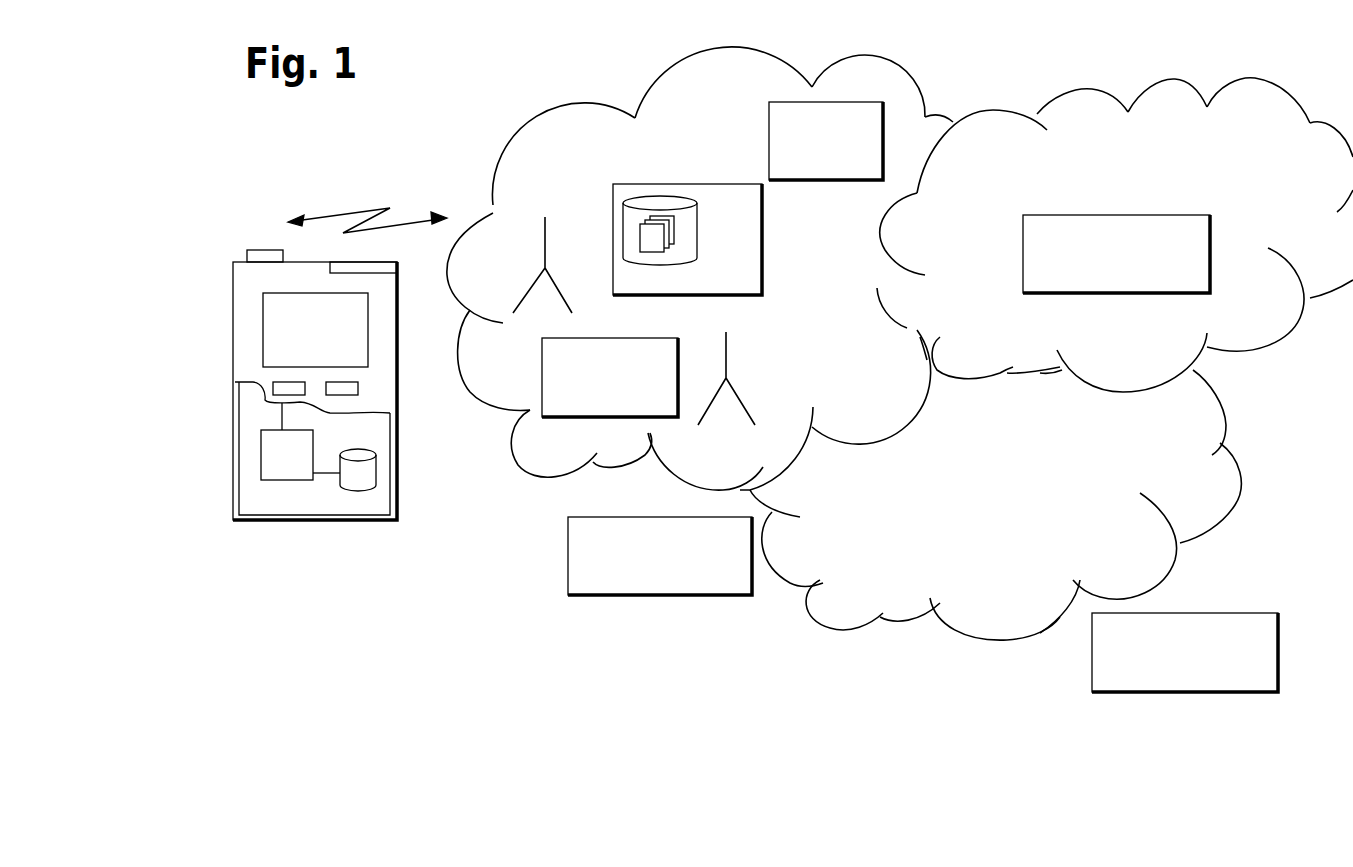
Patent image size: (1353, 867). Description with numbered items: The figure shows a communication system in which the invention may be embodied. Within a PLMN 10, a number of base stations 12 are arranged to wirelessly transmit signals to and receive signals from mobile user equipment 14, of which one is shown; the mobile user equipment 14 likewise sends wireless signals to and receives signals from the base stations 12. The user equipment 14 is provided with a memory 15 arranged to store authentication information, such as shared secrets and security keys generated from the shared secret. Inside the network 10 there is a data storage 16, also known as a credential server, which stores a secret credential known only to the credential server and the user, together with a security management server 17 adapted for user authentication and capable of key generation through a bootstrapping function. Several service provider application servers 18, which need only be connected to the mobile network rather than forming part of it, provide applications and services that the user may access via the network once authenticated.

The PLMN 10 is at (677, 152).
The base station 12 is at (545, 257).
The mobile user equipment 14 is at (245, 288).
The memory 15 is at (282, 452).
The data storage 16 is at (613, 193).
The security management server 17 is at (576, 393).
The service provider application server 18 is at (641, 567).